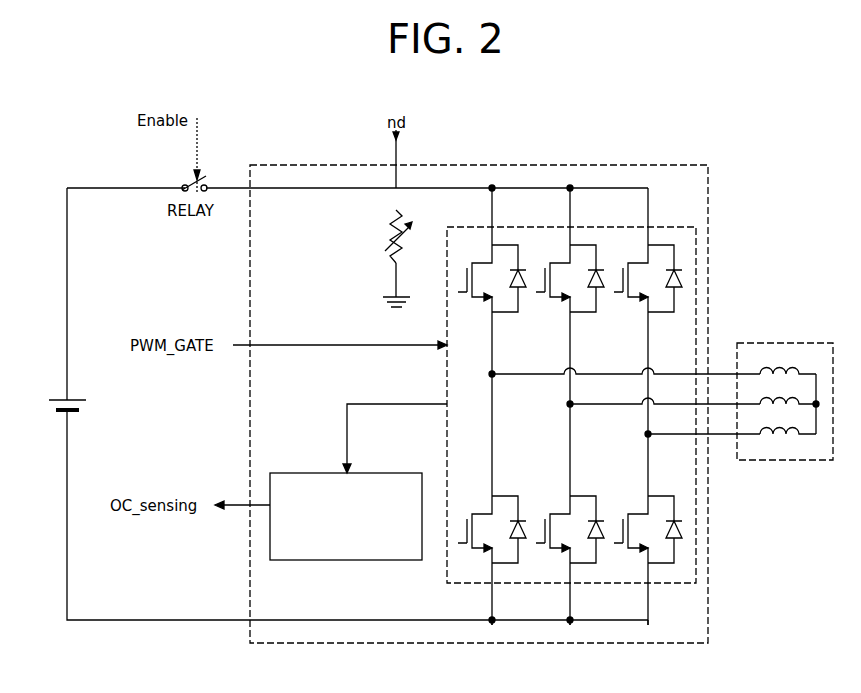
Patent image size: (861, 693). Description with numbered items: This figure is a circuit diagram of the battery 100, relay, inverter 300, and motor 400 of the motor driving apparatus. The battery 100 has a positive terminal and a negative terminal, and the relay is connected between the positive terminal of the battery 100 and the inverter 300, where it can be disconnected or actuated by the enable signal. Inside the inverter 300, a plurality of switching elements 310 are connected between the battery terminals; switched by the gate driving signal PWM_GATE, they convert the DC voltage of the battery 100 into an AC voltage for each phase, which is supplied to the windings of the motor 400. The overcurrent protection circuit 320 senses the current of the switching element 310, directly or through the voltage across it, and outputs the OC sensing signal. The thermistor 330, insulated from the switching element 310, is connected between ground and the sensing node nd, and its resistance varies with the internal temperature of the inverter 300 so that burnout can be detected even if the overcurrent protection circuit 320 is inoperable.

The battery 100 is at (78, 398).
The inverter 300 is at (624, 165).
The switching element 310 is at (697, 253).
The overcurrent protection circuit 320 is at (268, 528).
The thermistor 330 is at (392, 264).
The motor 400 is at (785, 462).